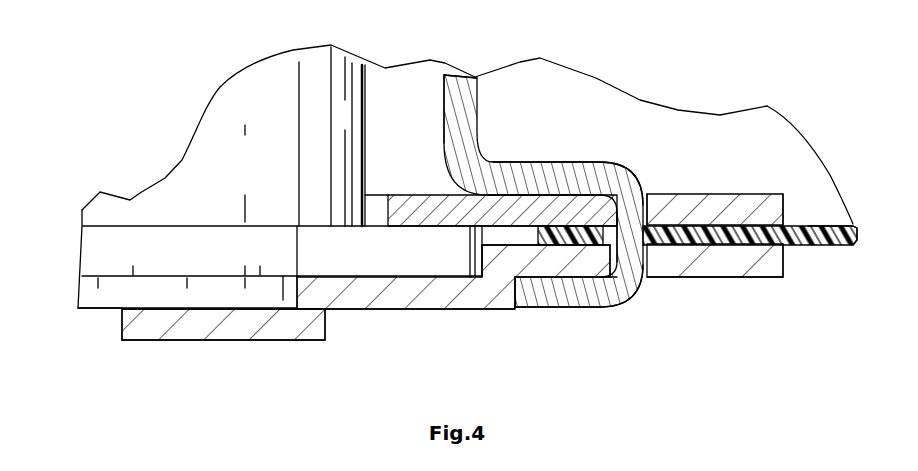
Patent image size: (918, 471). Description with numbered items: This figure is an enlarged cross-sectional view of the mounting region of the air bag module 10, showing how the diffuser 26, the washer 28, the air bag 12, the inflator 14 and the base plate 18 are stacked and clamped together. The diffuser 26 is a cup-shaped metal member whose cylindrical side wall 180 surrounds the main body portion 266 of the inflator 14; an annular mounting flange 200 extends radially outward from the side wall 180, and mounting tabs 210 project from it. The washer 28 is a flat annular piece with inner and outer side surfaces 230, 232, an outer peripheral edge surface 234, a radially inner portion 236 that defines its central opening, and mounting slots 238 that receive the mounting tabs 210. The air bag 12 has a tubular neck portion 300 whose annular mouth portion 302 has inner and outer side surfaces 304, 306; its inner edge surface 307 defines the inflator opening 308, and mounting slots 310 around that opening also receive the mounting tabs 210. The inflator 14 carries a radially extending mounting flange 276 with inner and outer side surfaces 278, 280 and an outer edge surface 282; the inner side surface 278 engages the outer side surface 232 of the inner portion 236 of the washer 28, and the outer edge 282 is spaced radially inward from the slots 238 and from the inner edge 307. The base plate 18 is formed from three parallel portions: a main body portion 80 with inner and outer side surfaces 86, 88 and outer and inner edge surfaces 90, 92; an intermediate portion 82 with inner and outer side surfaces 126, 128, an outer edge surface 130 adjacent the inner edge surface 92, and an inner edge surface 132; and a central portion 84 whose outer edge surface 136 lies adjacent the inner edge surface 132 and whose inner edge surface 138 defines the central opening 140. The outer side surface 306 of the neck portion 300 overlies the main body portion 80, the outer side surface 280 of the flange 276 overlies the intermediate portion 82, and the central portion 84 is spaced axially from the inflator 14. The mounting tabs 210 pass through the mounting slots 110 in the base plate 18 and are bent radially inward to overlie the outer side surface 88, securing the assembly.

The air bag module 10 is at (66, 181).
The air bag 12 is at (860, 244).
The inflator 14 is at (214, 83).
The base plate 18 is at (150, 322).
The diffuser 26 is at (457, 66).
The washer 28 is at (737, 186).
The main body portion 80 is at (703, 262).
The intermediate portion 82 is at (407, 320).
The central portion 84 is at (253, 320).
The inner side surface 86 is at (673, 195).
The outer side surface 88 is at (752, 277).
The outer edge surface 90 is at (808, 226).
The inner edge surface 92 is at (470, 250).
The mounting slots 110 is at (640, 275).
The inner side surface 126 is at (345, 263).
The outer side surface 128 is at (437, 310).
The outer edge surface 130 is at (528, 290).
The inner edge surface 132 is at (282, 270).
The outer edge surface 136 is at (327, 327).
The inner edge surface 138 is at (120, 315).
The central opening 140 is at (95, 305).
The side wall 180 is at (443, 88).
The mounting flange 200 is at (598, 108).
The mounting tabs 210 is at (636, 314).
The inner side surface 230 is at (772, 194).
The outer side surface 232 is at (738, 250).
The outer peripheral edge surface 234 is at (783, 200).
The radially inner portion 236 is at (443, 195).
The mounting slots 238 is at (618, 190).
The main body portion 266 is at (220, 130).
The mounting flange 276 is at (143, 248).
The inner side surface 278 is at (275, 226).
The outer side surface 280 is at (222, 276).
The outer edge surface 282 is at (498, 280).
The neck portion 300 is at (815, 256).
The mouth portion 302 is at (612, 300).
The inner side surface 304 is at (553, 200).
The outer side surface 306 is at (565, 290).
The inner edge surface 307 is at (523, 230).
The inflator opening 308 is at (503, 232).
The mounting slots 310 is at (640, 182).